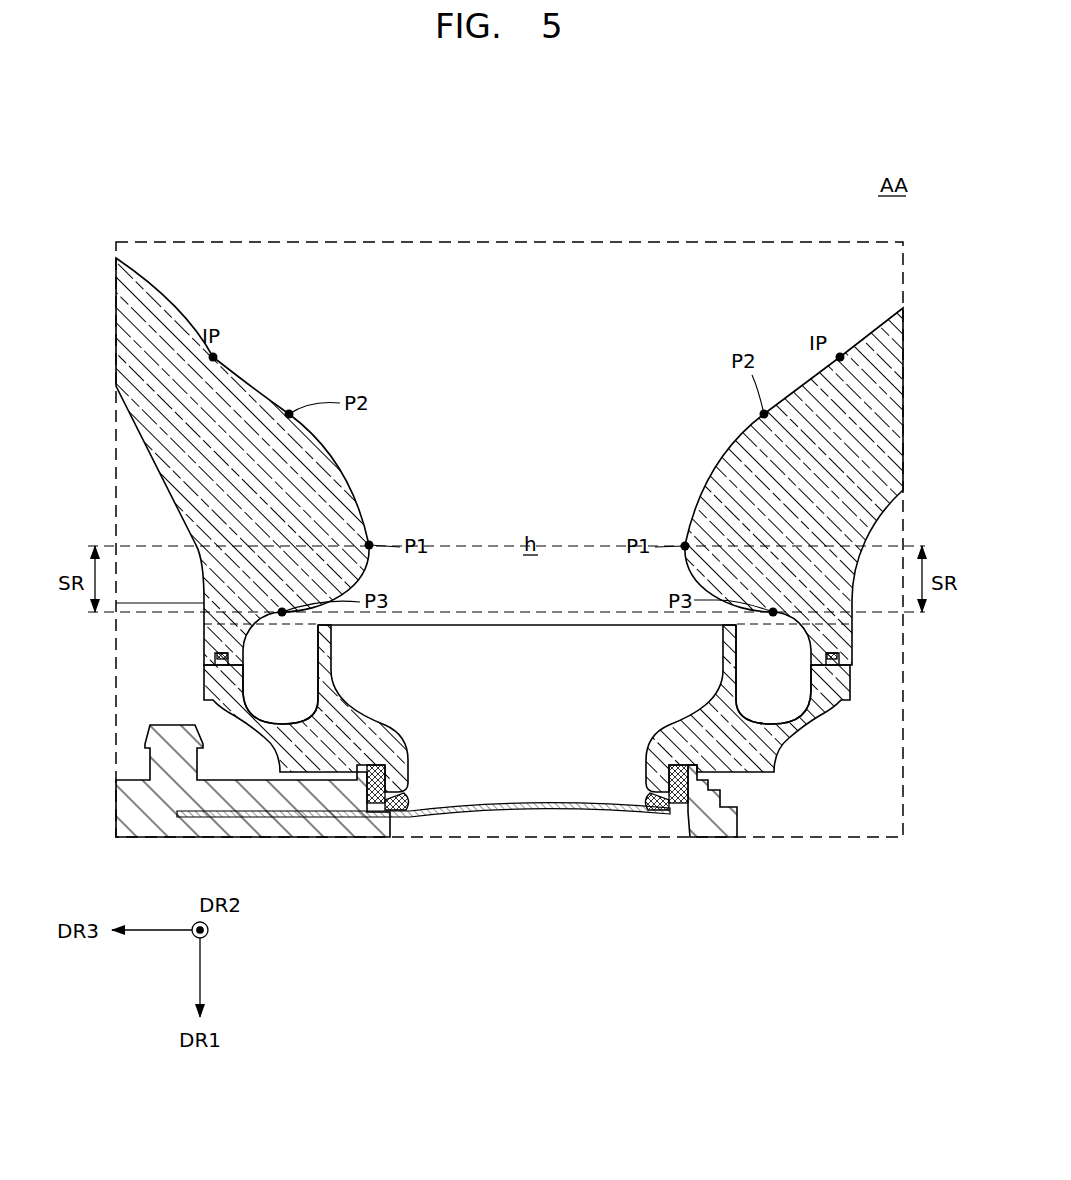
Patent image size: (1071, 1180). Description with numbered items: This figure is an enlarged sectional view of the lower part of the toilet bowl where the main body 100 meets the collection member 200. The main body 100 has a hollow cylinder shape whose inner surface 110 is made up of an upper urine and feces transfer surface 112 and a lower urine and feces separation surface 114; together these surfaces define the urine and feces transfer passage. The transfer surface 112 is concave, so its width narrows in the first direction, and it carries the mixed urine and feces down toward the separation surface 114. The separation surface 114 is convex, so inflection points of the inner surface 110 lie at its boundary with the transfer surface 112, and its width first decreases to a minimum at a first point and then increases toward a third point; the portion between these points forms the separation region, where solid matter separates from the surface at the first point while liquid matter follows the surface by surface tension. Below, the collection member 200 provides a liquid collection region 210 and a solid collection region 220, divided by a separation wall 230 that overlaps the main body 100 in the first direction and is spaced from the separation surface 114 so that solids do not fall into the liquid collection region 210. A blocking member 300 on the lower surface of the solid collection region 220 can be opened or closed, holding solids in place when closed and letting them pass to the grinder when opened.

The main body 100 is at (548, 407).
The inner surface 110 is at (650, 186).
The urine and feces transfer surface 112 is at (867, 328).
The urine and feces separation surface 114 is at (713, 462).
The collection member 200 is at (583, 717).
The liquid collection region 210 is at (266, 698).
The solid collection region 220 is at (503, 698).
The separation wall 230 is at (733, 648).
The blocking member 300 is at (578, 808).